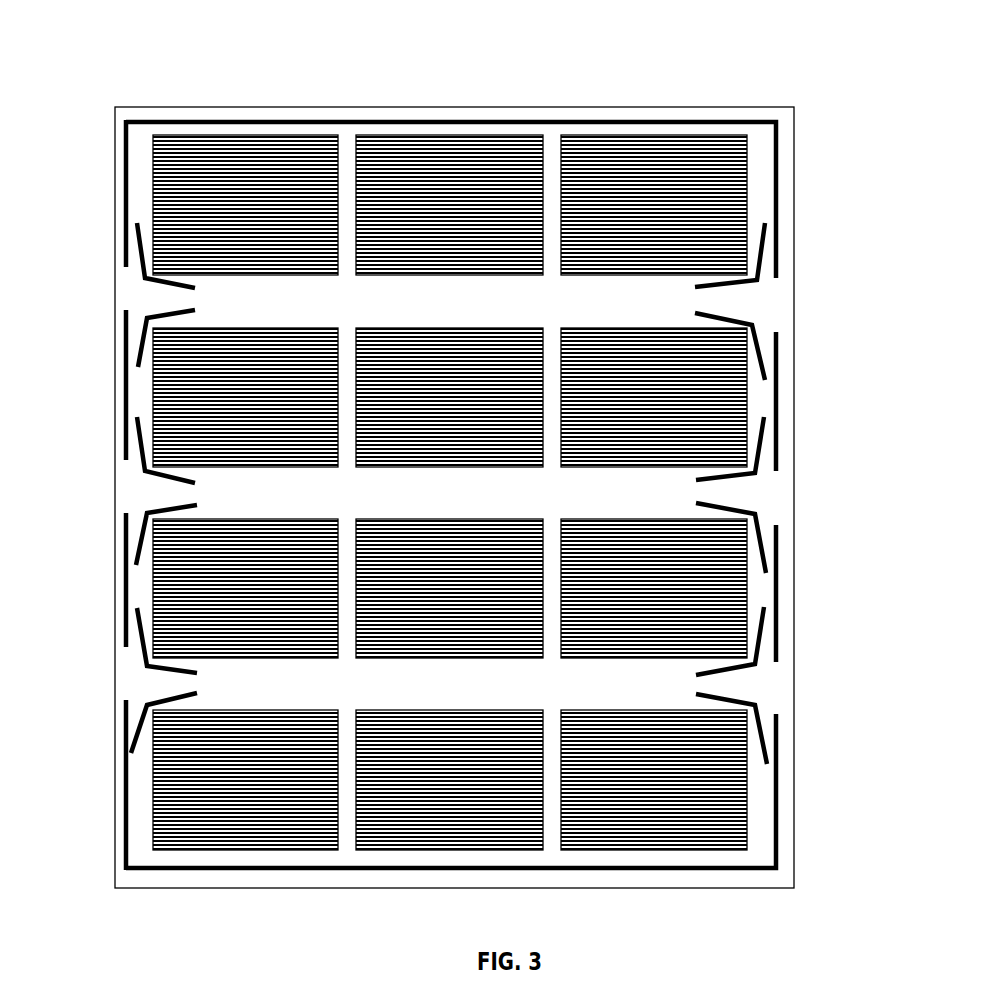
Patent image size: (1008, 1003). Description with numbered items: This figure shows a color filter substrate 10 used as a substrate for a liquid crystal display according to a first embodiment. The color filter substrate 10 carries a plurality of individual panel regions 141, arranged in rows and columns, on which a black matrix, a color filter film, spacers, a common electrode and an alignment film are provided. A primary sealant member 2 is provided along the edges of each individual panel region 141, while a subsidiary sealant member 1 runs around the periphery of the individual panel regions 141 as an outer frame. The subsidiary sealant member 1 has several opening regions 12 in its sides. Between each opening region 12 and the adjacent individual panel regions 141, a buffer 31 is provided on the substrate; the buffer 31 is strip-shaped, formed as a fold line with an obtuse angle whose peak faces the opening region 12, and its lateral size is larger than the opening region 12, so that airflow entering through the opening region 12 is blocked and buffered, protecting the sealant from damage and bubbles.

The subsidiary sealant member 1 is at (776, 794).
The color filter substrate 10 is at (287, 302).
The opening region 12 is at (125, 490).
The buffer 31 is at (755, 327).
The individual panel region 141 is at (670, 160).
The primary sealant member 2 is at (747, 405).